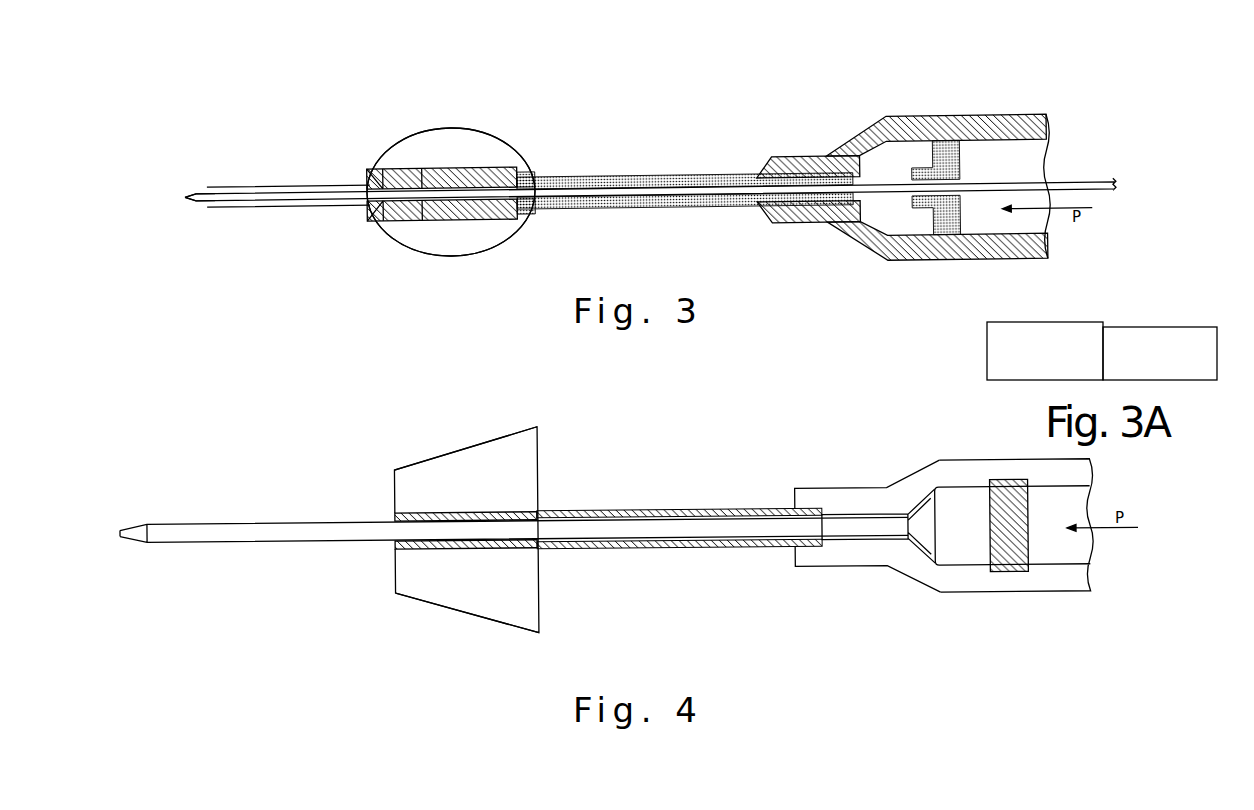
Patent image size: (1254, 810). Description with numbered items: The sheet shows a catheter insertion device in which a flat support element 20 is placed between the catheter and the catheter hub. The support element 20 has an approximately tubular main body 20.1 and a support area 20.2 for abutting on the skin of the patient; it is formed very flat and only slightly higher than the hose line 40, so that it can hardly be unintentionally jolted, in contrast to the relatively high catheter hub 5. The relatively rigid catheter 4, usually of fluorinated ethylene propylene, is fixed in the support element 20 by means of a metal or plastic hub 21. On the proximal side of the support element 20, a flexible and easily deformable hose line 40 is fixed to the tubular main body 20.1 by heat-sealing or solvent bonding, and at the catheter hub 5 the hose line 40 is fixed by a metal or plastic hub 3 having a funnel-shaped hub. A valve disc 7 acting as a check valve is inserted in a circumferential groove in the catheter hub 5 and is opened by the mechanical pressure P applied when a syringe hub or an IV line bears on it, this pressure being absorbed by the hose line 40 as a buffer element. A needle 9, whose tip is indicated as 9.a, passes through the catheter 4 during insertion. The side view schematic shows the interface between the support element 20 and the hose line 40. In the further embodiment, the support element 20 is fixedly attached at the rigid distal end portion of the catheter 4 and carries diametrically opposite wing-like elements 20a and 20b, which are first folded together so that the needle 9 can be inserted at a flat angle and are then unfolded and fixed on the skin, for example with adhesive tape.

In FIG. 3, the hub 3 is at (837, 153).
In FIG. 4, the hub 3 is at (870, 515).
In FIG. 3, the catheter 4 is at (273, 207).
In FIG. 4, the catheter 4 is at (295, 533).
In FIG. 3, the catheter hub 5 is at (972, 120).
In FIG. 4, the catheter hub 5 is at (940, 467).
In FIG. 3, the valve disc 7 is at (943, 237).
In FIG. 4, the valve disc 7 is at (1007, 563).
In FIG. 3, the needle 9 is at (1097, 177).
In FIG. 3, the guide wire tip 9.a is at (180, 197).
In FIG. 3, the support element 20 is at (556, 141).
In FIG. 3A, the support element 20 is at (1065, 343).
In FIG. 4, the support element 20 is at (366, 507).
In FIG. 3, the tubular main body 20.1 is at (447, 220).
In FIG. 3, the support area 20.2 is at (493, 143).
In FIG. 4, the wing-like element 20a is at (450, 478).
In FIG. 4, the wing-like element 20b is at (457, 590).
In FIG. 3, the hub 21 is at (385, 168).
In FIG. 4, the hub 21 is at (393, 563).
In FIG. 3, the hose line 40 is at (610, 207).
In FIG. 3A, the hose line 40 is at (1150, 345).
In FIG. 4, the hose line 40 is at (695, 543).